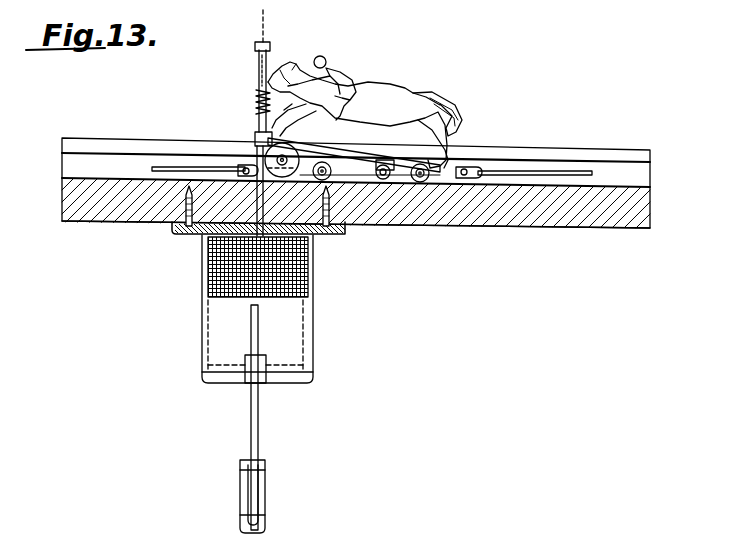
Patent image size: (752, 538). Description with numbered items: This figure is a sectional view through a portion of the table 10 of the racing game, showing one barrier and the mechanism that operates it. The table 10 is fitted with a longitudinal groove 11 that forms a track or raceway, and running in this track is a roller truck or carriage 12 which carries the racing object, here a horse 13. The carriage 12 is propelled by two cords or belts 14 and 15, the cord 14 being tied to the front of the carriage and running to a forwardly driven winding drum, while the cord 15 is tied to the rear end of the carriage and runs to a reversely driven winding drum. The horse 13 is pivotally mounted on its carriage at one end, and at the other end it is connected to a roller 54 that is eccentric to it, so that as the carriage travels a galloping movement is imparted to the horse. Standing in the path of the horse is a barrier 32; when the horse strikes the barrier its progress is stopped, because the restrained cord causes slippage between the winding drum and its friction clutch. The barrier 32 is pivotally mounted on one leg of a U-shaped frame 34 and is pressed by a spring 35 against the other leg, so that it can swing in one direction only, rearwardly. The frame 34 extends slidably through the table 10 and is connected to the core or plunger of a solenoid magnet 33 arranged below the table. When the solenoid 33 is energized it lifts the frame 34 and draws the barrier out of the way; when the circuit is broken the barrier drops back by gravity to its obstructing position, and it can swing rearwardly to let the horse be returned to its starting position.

The table 10 is at (526, 212).
The longitudinal groove 11 is at (605, 165).
The roller truck or carriage 12 is at (362, 176).
The horse 13 is at (388, 100).
The cord or belt 14 is at (196, 168).
The cord or belt 15 is at (515, 170).
The barrier 32 is at (270, 66).
The solenoid magnet 33 is at (305, 330).
The U-shaped frame 34 is at (258, 428).
The spring 35 is at (256, 104).
The roller 54 is at (292, 162).